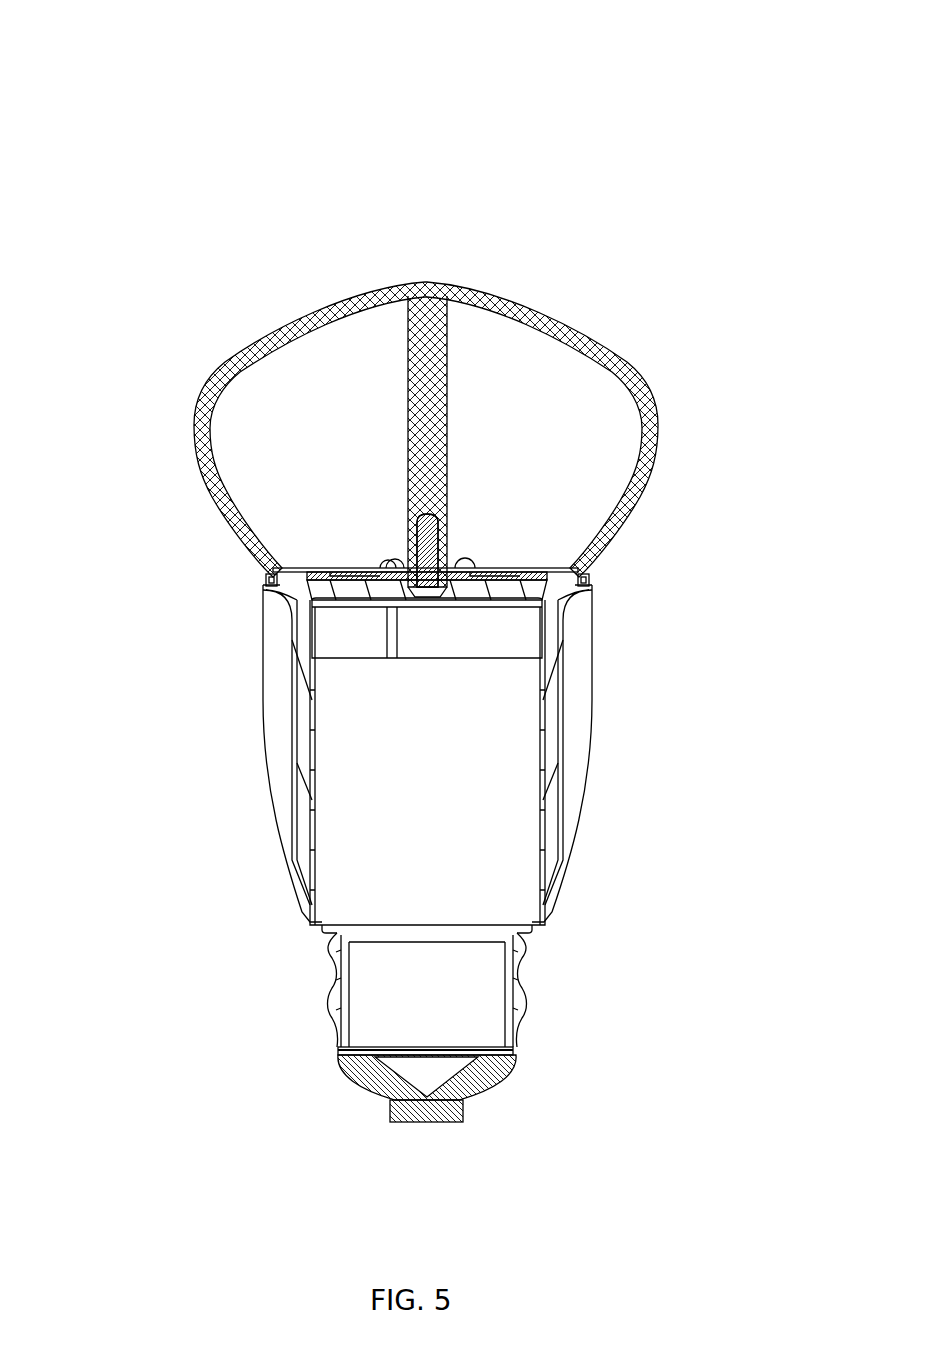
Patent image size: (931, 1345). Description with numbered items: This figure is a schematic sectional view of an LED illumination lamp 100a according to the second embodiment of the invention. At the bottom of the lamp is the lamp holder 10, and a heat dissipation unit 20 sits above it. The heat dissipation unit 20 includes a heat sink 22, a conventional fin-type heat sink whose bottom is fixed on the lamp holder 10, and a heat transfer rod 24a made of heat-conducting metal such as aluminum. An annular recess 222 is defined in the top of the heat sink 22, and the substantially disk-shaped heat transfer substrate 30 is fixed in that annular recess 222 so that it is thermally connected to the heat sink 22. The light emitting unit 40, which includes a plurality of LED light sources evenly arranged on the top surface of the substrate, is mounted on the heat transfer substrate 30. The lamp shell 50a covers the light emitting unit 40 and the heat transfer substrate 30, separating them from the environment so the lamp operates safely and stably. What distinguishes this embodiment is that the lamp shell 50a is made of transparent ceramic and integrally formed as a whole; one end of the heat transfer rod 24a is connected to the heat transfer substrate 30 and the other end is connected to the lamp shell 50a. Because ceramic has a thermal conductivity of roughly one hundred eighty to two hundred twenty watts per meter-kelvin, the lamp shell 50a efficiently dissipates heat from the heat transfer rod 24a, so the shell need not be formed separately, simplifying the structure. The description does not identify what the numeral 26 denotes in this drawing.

The LED illumination lamp 100a is at (460, 47).
The lamp shell 50a is at (203, 379).
The envelope wall 26 is at (562, 315).
The heat transfer rod 24a is at (447, 405).
The heat transfer substrate 30 is at (318, 575).
The light emitting unit 40 is at (360, 568).
The annular recess 222 is at (270, 580).
The heat sink 22 is at (585, 618).
The heat dissipation unit 20 is at (586, 730).
The lamp holder 10 is at (330, 993).